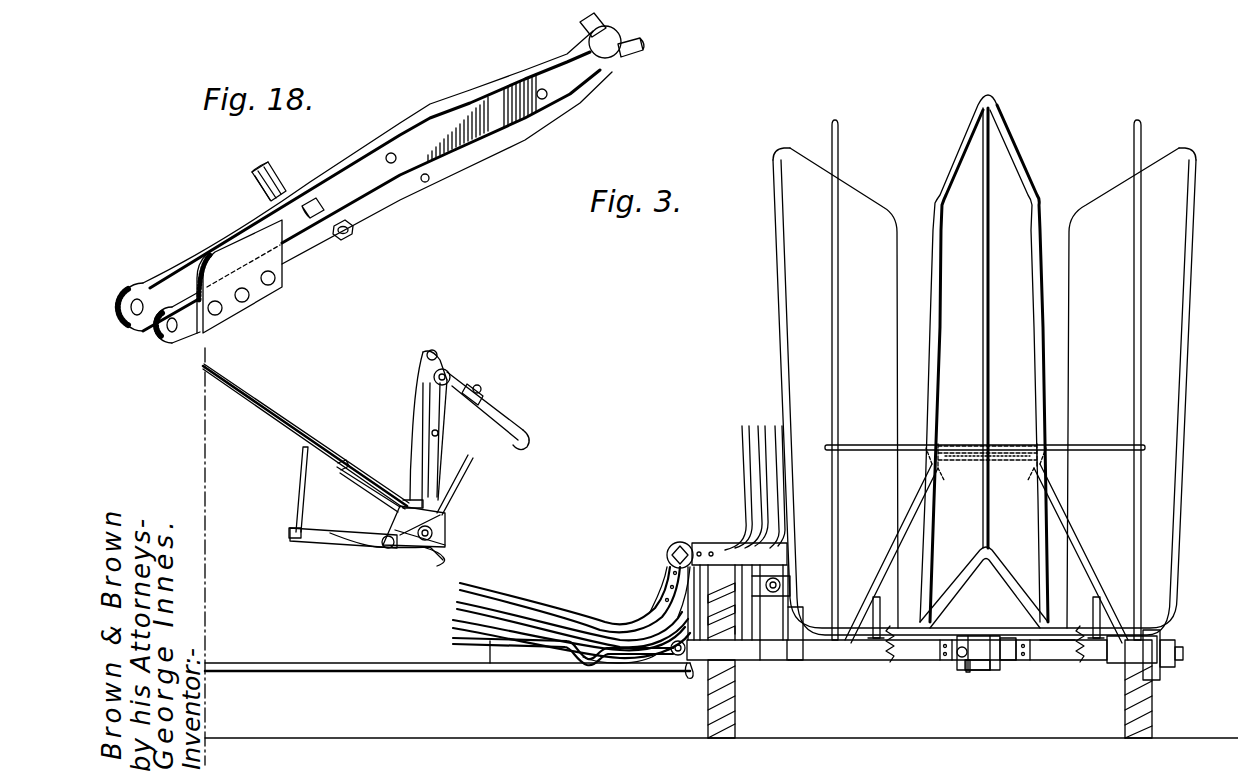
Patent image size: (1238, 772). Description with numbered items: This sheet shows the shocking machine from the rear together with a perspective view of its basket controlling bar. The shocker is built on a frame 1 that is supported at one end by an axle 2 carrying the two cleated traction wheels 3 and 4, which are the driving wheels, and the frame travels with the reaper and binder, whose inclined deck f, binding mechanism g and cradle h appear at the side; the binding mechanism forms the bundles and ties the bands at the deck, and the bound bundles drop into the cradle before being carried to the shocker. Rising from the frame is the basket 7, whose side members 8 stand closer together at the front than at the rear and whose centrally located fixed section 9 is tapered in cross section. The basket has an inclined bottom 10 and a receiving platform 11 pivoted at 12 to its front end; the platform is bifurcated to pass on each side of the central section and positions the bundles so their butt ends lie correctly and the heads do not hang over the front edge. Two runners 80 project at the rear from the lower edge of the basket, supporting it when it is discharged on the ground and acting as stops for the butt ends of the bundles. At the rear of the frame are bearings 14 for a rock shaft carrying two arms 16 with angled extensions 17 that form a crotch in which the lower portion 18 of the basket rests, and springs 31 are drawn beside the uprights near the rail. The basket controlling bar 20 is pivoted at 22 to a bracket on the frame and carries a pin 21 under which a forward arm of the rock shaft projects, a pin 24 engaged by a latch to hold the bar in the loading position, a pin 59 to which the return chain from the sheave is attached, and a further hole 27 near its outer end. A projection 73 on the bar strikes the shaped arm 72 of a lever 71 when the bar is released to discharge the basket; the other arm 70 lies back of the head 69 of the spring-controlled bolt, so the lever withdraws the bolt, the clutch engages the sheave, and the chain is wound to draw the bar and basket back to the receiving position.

In FIG. 3, the frame 1 is at (712, 683).
In FIG. 3, the axle 2 is at (1183, 652).
In FIG. 3, the traction wheel 3 is at (1152, 695).
In FIG. 3, the traction wheel 4 is at (735, 705).
In FIG. 3, the basket 7 is at (1192, 530).
In FIG. 3, the side members 8 is at (857, 207).
In FIG. 3, the fixed section 9 is at (1022, 283).
In FIG. 3, the inclined bottom 10 is at (984, 587).
In FIG. 3, the receiving platform 11 is at (1090, 446).
In FIG. 3, the pivot 12 is at (1020, 455).
In FIG. 3, the bearings 14 is at (965, 640).
In FIG. 3, the arms 16 is at (873, 640).
In FIG. 3, the extensions 17 is at (880, 605).
In FIG. 3, the lower portion 18 is at (1055, 642).
In FIG. 18, the bar 20 is at (432, 103).
In FIG. 18, the pin 21 is at (280, 173).
In FIG. 18, the pivot 22 is at (166, 333).
In FIG. 18, the pin 24 is at (633, 46).
In FIG. 18, the hole 27 is at (545, 99).
In FIG. 3, the spring 31 is at (895, 648).
In FIG. 18, the pin 59 is at (394, 162).
In FIG. 3, the head 69 is at (960, 658).
In FIG. 3, the arm 70 is at (968, 674).
In FIG. 3, the lever 71 is at (978, 672).
In FIG. 3, the arm 72 is at (1008, 640).
In FIG. 18, the projection 73 is at (260, 240).
In FIG. 3, the runners 80 is at (839, 155).
In FIG. 3, the inclined deck f is at (275, 409).
In FIG. 3, the binding mechanism g is at (448, 374).
In FIG. 3, the cradle h is at (620, 589).